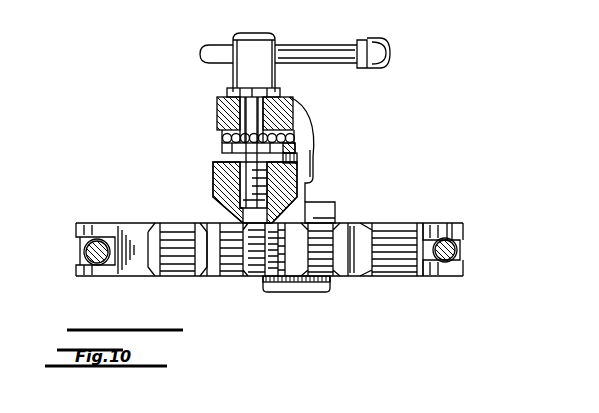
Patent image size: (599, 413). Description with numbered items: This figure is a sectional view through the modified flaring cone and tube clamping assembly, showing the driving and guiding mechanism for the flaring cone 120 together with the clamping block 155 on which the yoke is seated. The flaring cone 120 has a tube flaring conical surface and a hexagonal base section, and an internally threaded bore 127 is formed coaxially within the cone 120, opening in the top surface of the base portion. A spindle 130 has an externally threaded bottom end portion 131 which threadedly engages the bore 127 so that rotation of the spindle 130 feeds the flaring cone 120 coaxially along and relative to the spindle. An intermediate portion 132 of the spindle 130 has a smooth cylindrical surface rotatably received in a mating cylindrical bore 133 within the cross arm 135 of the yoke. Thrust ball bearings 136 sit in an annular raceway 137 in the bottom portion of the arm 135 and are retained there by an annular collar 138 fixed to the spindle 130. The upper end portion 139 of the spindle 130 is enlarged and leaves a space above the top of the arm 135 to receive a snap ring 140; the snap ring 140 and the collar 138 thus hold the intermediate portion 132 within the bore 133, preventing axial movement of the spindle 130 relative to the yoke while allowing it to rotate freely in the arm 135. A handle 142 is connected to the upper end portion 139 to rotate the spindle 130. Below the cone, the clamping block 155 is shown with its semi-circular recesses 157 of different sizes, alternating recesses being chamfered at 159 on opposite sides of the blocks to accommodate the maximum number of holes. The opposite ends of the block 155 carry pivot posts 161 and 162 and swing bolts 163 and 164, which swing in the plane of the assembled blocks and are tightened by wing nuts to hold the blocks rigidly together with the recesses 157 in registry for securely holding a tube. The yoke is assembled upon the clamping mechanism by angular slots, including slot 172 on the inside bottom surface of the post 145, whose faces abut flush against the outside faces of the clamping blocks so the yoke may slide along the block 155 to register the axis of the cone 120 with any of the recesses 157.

The flaring cone 120 is at (198, 194).
The internally threaded bore 127 is at (240, 206).
The spindle 130 is at (268, 121).
The externally threaded bottom end portion 131 is at (225, 177).
The intermediate portion 132 is at (283, 105).
The cylindrical bore 133 is at (285, 96).
The cross arm 135 is at (218, 115).
The thrust ball bearings 136 is at (250, 150).
The annular raceway 137 is at (228, 136).
The annular collar 138 is at (297, 146).
The upper end portion 139 is at (263, 33).
The snap ring 140 is at (232, 89).
The handle 142 is at (336, 52).
The post 145 is at (315, 183).
The clamping block 155 is at (460, 230).
The semi-circular recess 157 is at (223, 255).
The chamfer 159 is at (397, 223).
The pivot post 161 is at (95, 232).
The pivot post 162 is at (445, 228).
The swing bolt 163 is at (86, 252).
The swing bolt 164 is at (461, 248).
The angular slot 172 is at (335, 213).